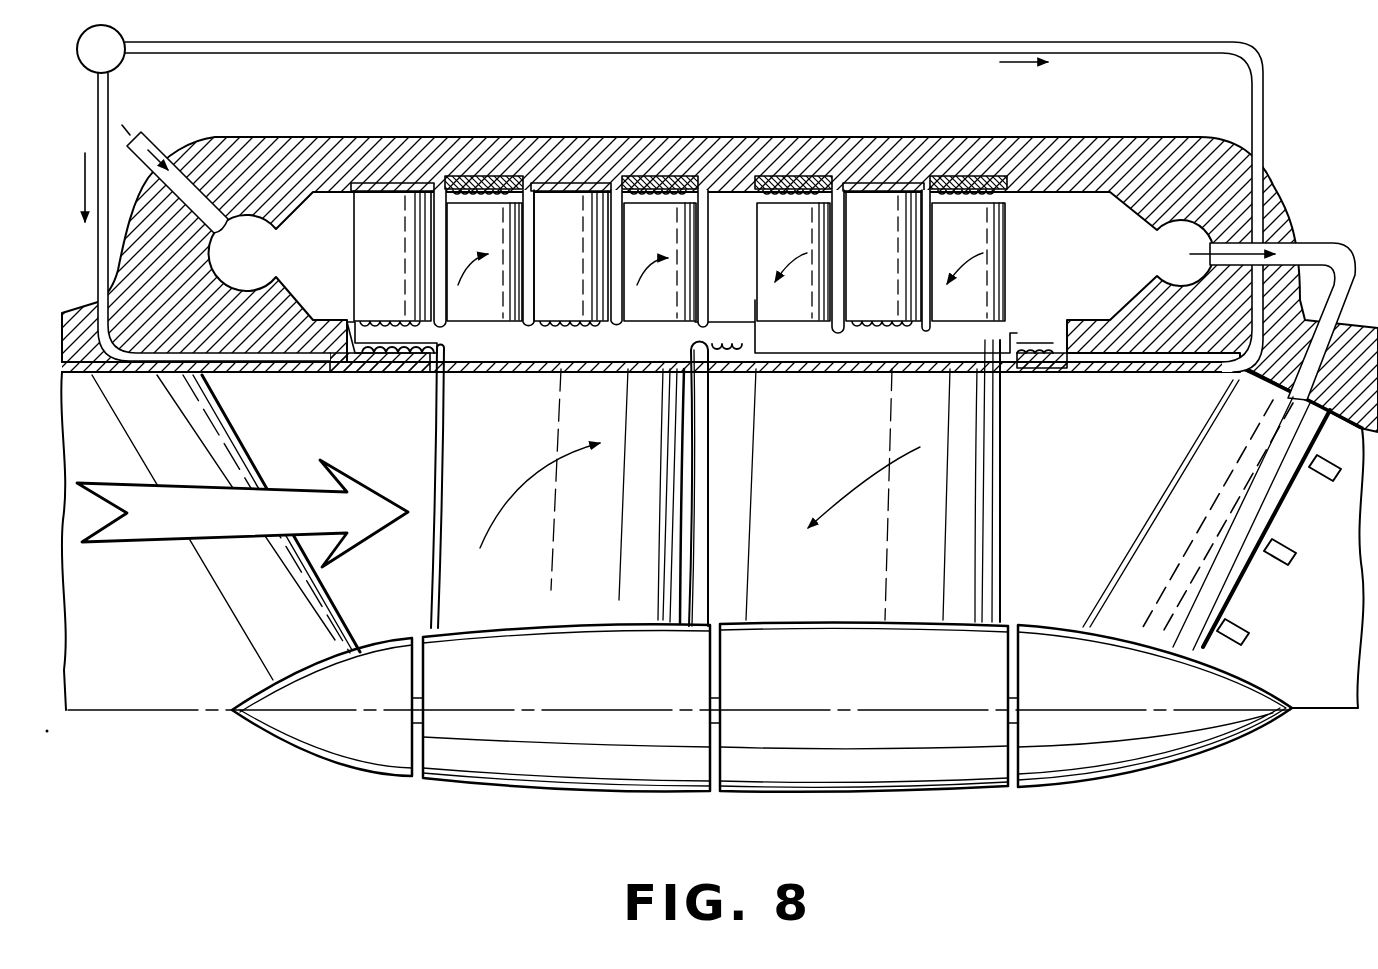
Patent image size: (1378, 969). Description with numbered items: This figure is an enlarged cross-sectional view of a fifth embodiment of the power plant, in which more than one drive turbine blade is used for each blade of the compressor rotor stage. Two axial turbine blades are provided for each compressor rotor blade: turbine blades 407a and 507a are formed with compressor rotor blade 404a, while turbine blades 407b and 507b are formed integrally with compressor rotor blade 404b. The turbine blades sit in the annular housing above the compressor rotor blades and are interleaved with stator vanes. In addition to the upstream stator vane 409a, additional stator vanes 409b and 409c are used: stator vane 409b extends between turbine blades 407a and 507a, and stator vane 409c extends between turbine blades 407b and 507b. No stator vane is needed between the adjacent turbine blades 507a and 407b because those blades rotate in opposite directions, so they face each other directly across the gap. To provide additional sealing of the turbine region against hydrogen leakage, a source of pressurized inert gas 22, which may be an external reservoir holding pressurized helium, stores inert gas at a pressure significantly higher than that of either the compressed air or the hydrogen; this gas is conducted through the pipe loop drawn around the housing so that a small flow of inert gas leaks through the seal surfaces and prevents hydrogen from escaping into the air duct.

The source of pressurized inert gas 22 is at (119, 60).
The upstream stator vane 409a is at (380, 203).
The turbine blade 407a is at (480, 222).
The stator vane 409b is at (570, 212).
The turbine blade 507a is at (657, 223).
The turbine blade 407b is at (782, 227).
The stator vane 409c is at (870, 213).
The turbine blade 507b is at (963, 217).
The compressor rotor blade 404a is at (455, 422).
The compressor rotor blade 404b is at (958, 475).